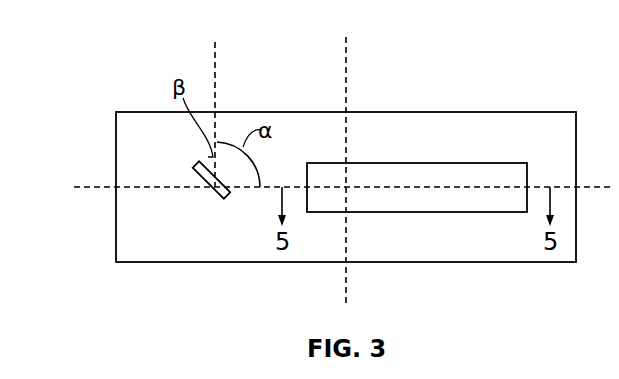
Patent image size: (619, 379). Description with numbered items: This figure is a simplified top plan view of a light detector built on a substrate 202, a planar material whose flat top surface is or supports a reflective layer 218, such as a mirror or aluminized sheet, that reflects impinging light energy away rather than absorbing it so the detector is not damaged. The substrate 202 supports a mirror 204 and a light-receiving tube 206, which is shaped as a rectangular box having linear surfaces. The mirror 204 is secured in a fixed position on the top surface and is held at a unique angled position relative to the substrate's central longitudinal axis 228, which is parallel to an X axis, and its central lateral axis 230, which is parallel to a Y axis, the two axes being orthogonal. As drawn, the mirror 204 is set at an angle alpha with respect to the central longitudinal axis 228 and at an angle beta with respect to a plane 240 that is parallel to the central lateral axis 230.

The substrate 202 is at (548, 263).
The mirror 204 is at (200, 183).
The light-receiving tube 206 is at (480, 163).
The reflective layer 218 is at (173, 147).
The central longitudinal axis 228 is at (98, 189).
The central lateral axis 230 is at (347, 90).
The plane 240 is at (216, 85).